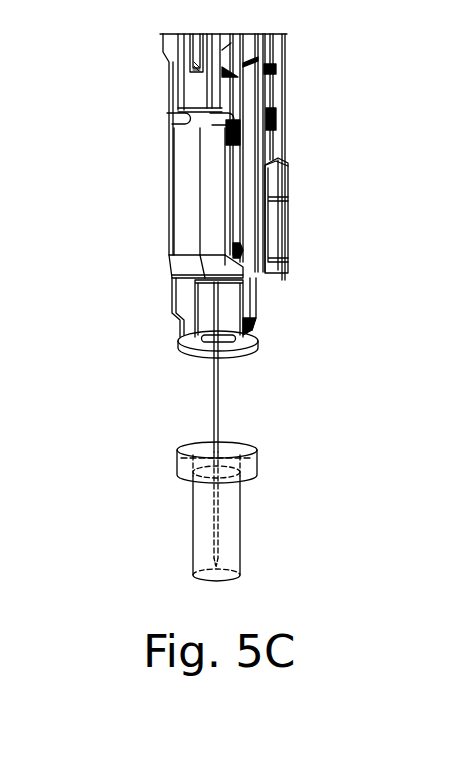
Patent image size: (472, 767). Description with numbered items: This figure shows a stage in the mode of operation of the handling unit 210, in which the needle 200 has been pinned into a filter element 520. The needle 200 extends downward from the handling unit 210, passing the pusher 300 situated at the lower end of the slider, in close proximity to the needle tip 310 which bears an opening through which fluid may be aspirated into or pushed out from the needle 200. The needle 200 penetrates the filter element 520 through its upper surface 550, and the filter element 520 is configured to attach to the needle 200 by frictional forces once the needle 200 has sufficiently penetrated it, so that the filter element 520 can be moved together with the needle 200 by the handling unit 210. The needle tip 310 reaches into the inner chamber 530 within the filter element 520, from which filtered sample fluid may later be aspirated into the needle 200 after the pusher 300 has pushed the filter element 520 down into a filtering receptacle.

The handling unit 210 is at (184, 181).
The pusher 300 is at (201, 350).
The needle 200 is at (213, 392).
The upper surface 550 is at (193, 452).
The inner chamber 530 is at (230, 512).
The filter element 520 is at (203, 525).
The needle tip 310 is at (223, 562).